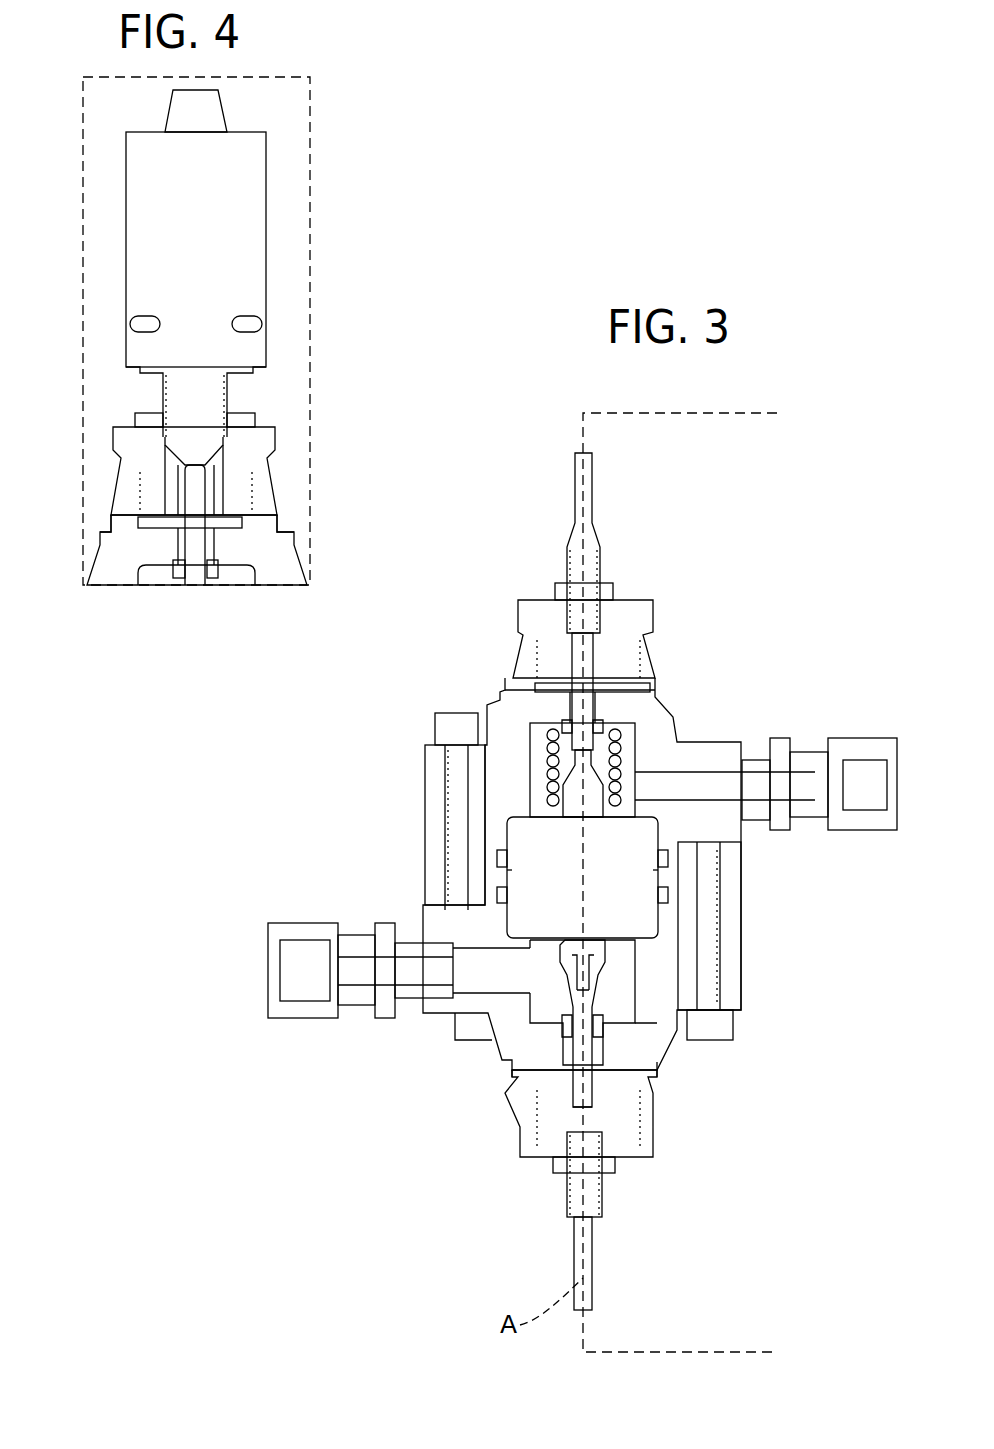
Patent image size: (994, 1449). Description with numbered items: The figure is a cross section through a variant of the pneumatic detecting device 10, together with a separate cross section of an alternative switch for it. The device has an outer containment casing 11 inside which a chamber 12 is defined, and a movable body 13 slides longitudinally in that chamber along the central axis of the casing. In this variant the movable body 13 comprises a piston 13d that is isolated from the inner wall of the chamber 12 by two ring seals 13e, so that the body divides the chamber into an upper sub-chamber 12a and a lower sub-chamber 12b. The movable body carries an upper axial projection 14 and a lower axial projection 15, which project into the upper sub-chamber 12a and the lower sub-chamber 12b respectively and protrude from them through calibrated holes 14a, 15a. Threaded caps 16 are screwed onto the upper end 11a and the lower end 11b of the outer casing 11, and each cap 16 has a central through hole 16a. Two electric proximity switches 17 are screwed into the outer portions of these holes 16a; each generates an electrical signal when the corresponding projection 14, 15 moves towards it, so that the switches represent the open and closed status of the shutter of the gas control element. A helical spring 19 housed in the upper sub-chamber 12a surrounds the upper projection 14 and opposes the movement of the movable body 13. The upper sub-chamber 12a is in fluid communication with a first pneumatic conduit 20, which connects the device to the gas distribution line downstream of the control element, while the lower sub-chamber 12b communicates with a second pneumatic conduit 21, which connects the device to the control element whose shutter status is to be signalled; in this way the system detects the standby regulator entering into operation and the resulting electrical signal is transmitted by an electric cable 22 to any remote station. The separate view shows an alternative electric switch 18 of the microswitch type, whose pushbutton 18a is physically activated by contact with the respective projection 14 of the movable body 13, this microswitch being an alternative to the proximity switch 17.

In FIG. 3, the pneumatic detecting device 10 is at (498, 677).
In FIG. 4, the outer containment casing 11 is at (297, 552).
In FIG. 3, the outer containment casing 11 is at (517, 1035).
In FIG. 4, the upper end of the outer casing 11a is at (107, 490).
In FIG. 3, the upper end of the outer casing 11a is at (630, 582).
In FIG. 3, the lower end of the outer casing 11b is at (647, 1200).
In FIG. 3, the chamber 12 is at (648, 932).
In FIG. 3, the upper sub-chamber 12a is at (542, 750).
In FIG. 3, the lower sub-chamber 12b is at (615, 1003).
In FIG. 3, the movable body 13 is at (565, 858).
In FIG. 3, the piston 13d is at (622, 884).
In FIG. 3, the ring seals 13e is at (490, 895).
In FIG. 4, the upper projection 14 is at (193, 527).
In FIG. 3, the upper projection 14 is at (587, 700).
In FIG. 3, the upper calibrated hole 14a is at (567, 638).
In FIG. 3, the lower projection 15 is at (588, 1045).
In FIG. 3, the lower calibrated hole 15a is at (565, 1127).
In FIG. 4, the cap 16 is at (258, 444).
In FIG. 3, the cap 16 is at (538, 623).
In FIG. 4, the central through hole 16a is at (180, 465).
In FIG. 3, the central through hole 16a is at (603, 632).
In FIG. 3, the electric proximity switch 17 is at (573, 543).
In FIG. 4, the electric switch (microswitch) 18 is at (222, 244).
In FIG. 4, the pushbutton 18a is at (212, 466).
In FIG. 3, the helical spring 19 is at (627, 742).
In FIG. 3, the first pneumatic conduit 20 is at (867, 788).
In FIG. 3, the second pneumatic conduit 21 is at (315, 968).
In FIG. 3, the electric cable 22 is at (745, 413).